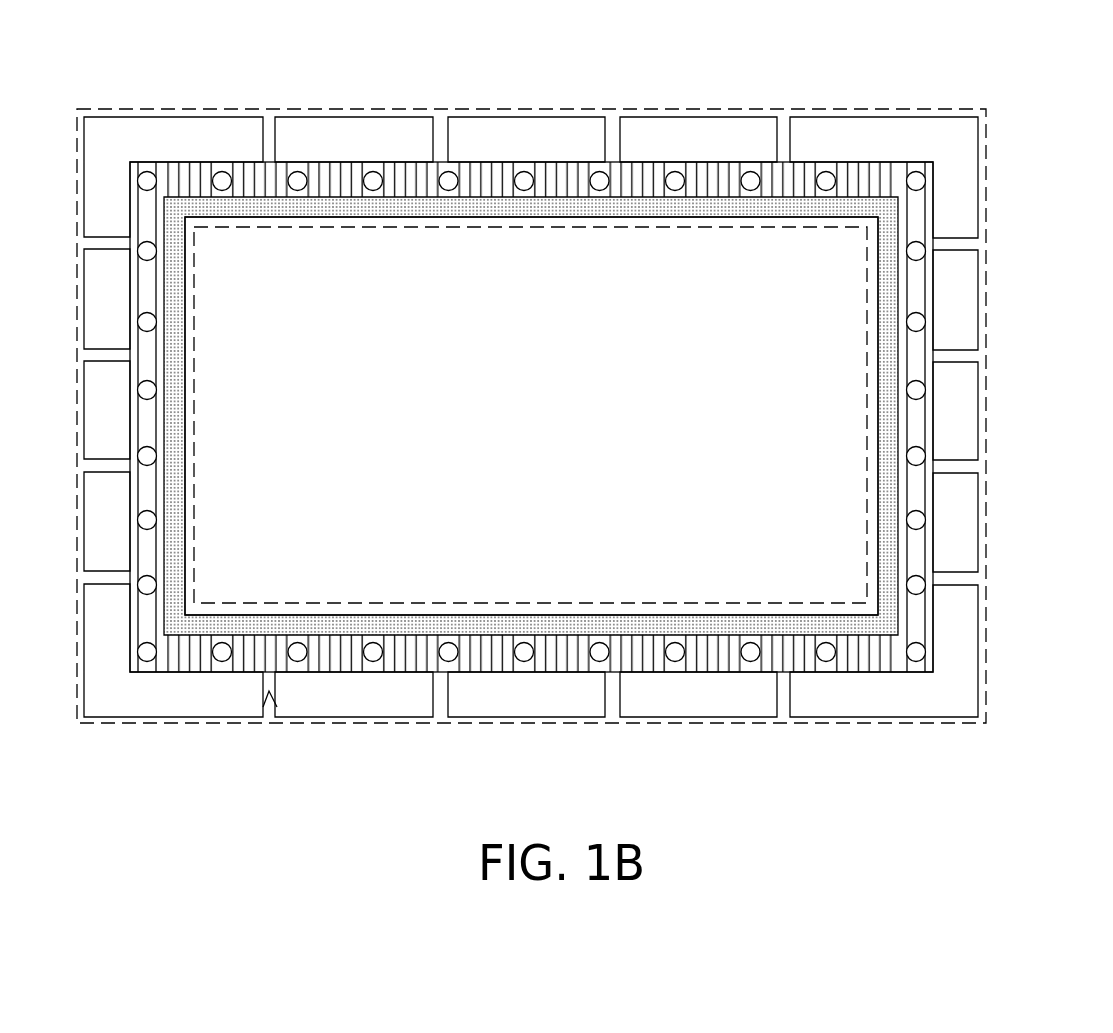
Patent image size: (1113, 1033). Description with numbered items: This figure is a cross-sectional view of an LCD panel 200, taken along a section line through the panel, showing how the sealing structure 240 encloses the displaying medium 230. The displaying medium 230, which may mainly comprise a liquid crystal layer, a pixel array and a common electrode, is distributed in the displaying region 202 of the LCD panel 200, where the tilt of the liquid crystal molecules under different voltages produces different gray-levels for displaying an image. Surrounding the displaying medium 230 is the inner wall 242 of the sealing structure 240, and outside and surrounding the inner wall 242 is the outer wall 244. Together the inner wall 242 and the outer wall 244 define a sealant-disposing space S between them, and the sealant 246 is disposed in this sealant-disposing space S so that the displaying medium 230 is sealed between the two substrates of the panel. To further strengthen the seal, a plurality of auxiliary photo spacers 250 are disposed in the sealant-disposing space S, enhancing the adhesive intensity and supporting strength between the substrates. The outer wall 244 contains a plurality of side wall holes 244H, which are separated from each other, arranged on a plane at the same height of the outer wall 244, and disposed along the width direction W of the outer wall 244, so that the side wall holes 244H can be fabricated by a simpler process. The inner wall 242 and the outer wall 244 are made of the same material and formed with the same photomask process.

The LCD panel 200 is at (587, 430).
The displaying region 202 is at (333, 259).
The displaying medium 230 is at (708, 245).
The sealing structure 240 is at (988, 135).
The inner wall 242 is at (897, 218).
The outer wall 244 is at (968, 330).
The side wall holes 244H is at (976, 354).
The sealant 246 is at (925, 284).
The auxiliary photo spacers 250 is at (920, 392).
The sealant-disposing space S is at (872, 174).
The width direction W is at (935, 518).